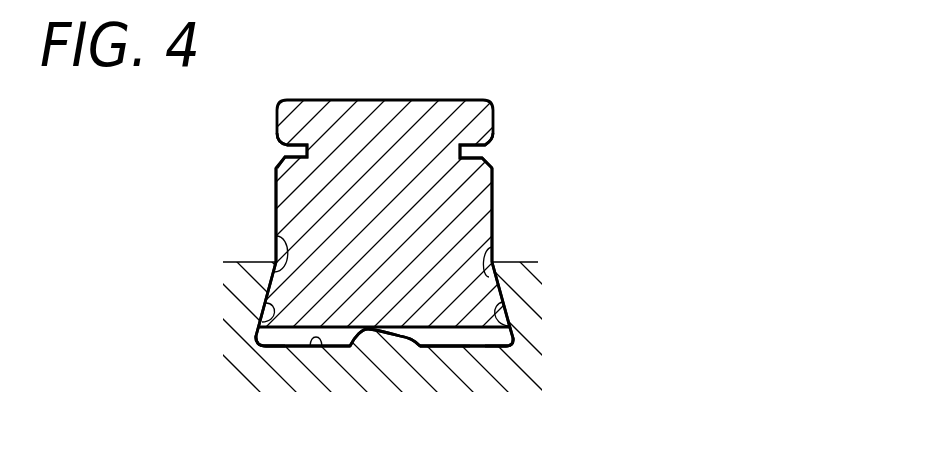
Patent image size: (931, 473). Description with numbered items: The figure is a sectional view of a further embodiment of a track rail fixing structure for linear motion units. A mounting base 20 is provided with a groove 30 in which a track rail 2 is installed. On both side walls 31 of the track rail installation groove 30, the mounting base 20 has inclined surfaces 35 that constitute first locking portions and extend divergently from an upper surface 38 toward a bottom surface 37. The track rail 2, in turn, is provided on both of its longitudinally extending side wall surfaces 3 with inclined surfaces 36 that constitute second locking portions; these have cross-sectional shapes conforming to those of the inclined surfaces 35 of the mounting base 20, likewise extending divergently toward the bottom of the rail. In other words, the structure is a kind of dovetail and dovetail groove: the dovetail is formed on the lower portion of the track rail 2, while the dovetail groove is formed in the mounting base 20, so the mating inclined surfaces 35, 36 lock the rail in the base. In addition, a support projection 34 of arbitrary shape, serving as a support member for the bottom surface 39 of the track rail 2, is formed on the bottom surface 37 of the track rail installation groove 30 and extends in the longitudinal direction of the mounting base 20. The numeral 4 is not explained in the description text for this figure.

The track rail 2 is at (391, 172).
The side wall surfaces 3 is at (276, 188).
The groove 4 is at (280, 163).
The mounting base 20 is at (530, 333).
The groove 30 is at (427, 353).
The side walls 31 is at (275, 348).
The support projection 34 is at (385, 340).
The inclined surfaces 35 is at (277, 240).
The inclined surfaces 36 is at (266, 292).
The bottom surface 37 is at (320, 348).
The upper surface 38 is at (522, 257).
The bottom surface 39 is at (453, 348).